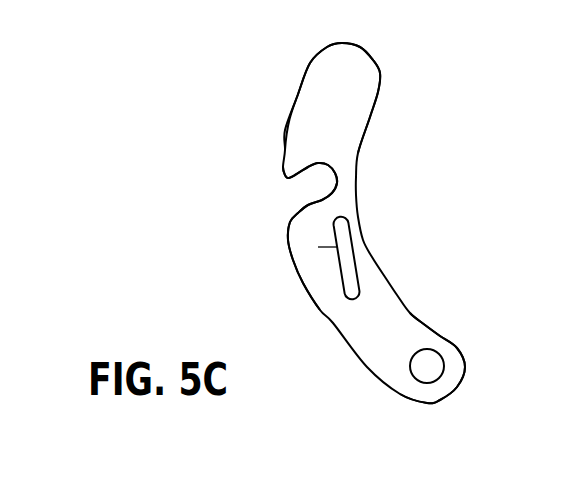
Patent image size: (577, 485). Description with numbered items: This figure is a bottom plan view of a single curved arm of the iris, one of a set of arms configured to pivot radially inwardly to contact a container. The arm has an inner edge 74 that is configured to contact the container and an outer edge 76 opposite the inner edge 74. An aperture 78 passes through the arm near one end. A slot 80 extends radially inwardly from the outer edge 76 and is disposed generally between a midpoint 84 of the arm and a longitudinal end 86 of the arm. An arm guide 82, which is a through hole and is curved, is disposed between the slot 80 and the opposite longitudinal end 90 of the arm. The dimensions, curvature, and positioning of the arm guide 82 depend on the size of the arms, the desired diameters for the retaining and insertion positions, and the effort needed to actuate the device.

The inner edge 74 is at (383, 273).
The outer edge 76 is at (303, 273).
The aperture 78 is at (428, 370).
The slot 80 is at (314, 194).
The arm guide 82 is at (352, 253).
The midpoint 84 is at (317, 250).
The longitudinal end 86 is at (388, 62).
The longitudinal end 90 is at (475, 358).